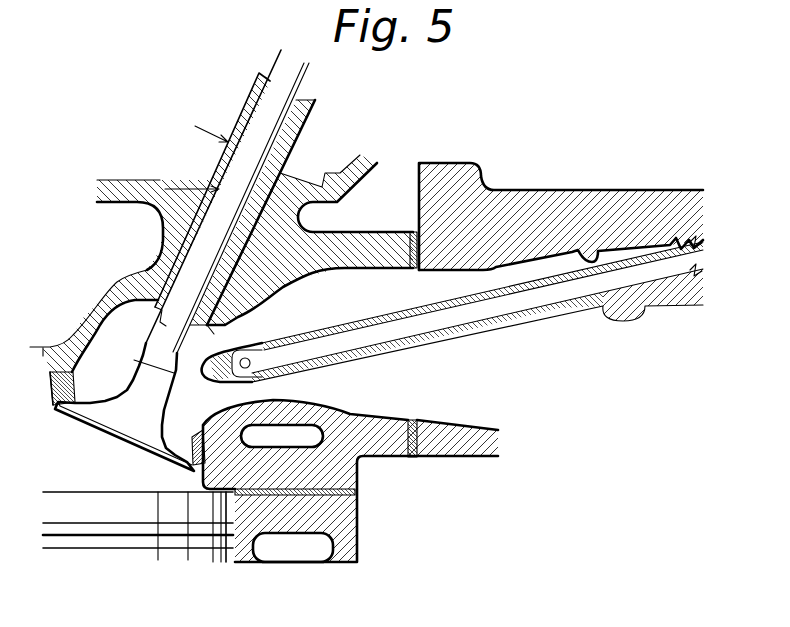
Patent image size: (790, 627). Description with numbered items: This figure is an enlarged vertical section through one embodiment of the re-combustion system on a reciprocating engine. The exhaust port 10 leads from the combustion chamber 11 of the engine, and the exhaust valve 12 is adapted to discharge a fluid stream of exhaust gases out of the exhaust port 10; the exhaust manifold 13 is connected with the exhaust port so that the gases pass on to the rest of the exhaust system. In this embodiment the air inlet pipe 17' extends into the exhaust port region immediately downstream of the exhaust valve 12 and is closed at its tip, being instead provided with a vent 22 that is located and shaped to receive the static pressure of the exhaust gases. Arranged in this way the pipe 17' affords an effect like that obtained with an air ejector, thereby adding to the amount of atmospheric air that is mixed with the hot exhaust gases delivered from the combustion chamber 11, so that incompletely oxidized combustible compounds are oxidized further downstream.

The exhaust port 10 is at (255, 325).
The combustion chamber 11 is at (96, 473).
The exhaust valve 12 is at (160, 182).
The exhaust manifold 13 is at (578, 207).
The air inlet pipe 17' is at (452, 259).
The vent 22 is at (246, 369).